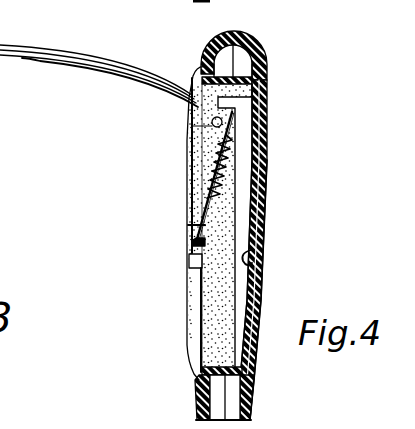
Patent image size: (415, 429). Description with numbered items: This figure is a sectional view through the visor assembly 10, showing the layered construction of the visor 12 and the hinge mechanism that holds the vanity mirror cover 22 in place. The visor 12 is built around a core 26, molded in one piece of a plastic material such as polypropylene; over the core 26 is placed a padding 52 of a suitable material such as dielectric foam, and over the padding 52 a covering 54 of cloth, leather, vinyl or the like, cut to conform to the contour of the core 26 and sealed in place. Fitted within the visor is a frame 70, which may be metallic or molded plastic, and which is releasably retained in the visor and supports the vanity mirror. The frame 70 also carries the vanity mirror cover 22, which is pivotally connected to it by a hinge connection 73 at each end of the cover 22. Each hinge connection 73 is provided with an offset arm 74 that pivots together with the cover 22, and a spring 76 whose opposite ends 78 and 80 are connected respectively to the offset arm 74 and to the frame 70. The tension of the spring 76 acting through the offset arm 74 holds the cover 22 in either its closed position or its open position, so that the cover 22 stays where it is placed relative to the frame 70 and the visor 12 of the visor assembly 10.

The visor assembly 10 is at (268, 146).
The visor 12 is at (264, 315).
The vanity mirror cover 22 is at (124, 62).
The core 26 is at (268, 260).
The padding 52 is at (268, 215).
The covering 54 is at (268, 183).
The frame 70 is at (192, 366).
The hinge connection 73 is at (208, 123).
The offset arm 74 is at (205, 114).
The spring 76 is at (200, 207).
The spring end 78 is at (212, 165).
The spring end 80 is at (191, 215).